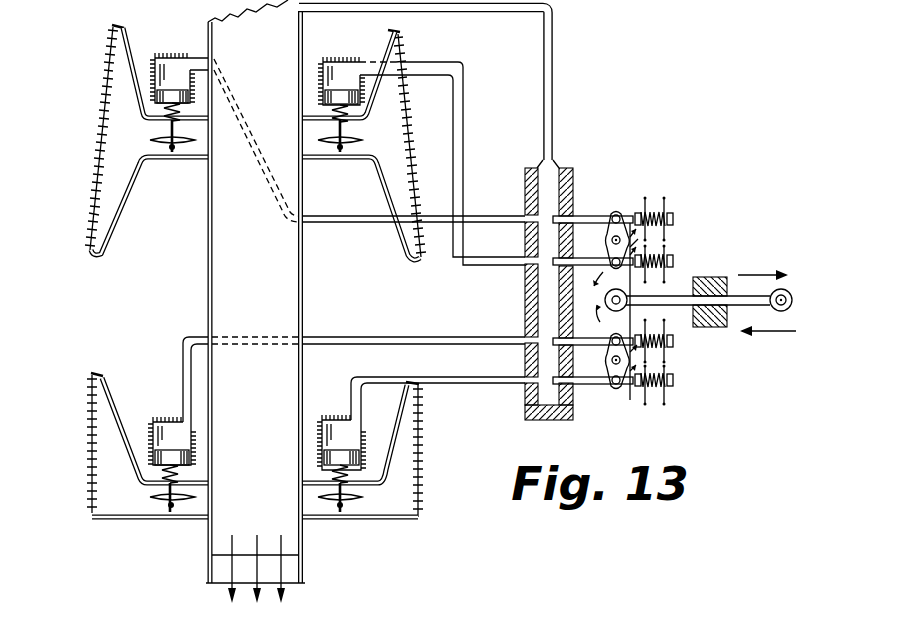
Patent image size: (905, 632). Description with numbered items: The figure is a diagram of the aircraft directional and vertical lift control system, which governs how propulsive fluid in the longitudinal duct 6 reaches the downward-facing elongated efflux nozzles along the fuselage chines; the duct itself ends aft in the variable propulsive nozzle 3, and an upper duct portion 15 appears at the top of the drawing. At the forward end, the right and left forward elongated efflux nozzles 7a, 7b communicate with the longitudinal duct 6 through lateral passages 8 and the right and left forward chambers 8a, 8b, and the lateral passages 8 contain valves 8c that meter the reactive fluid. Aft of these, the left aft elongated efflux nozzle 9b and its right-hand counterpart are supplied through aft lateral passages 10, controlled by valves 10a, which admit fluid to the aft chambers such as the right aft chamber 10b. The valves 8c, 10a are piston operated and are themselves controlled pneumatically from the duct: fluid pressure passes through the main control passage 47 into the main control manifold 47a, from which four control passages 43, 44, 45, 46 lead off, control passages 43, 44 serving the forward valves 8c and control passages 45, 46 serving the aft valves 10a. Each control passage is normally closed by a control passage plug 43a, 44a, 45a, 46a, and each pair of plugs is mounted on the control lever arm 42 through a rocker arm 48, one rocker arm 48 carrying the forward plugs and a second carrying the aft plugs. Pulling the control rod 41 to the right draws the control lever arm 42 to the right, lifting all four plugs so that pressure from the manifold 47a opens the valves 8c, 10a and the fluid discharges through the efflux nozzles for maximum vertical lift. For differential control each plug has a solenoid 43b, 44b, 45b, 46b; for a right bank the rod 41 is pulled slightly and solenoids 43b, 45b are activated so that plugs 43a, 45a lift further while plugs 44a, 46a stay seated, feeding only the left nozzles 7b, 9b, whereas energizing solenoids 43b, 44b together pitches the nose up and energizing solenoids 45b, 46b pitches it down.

The propulsive nozzle 3 is at (303, 583).
The longitudinal duct 6 is at (250, 274).
The right forward elongated efflux nozzle 7a is at (410, 156).
The left forward elongated efflux nozzle 7b is at (96, 126).
The forward lateral passage 8 is at (158, 157).
The right forward chamber 8a is at (370, 100).
The left forward chamber 8b is at (133, 72).
The forward lateral passage valve 8c is at (185, 152).
The left aft elongated efflux nozzle 9b is at (92, 478).
The aft lateral passage 10 is at (145, 513).
The aft lateral passage valve 10a is at (118, 430).
The right aft chamber 10b is at (397, 447).
The upper conduit section 15 is at (620, 4).
The control rod 41 is at (665, 296).
The control lever arm 42 is at (630, 242).
The control passage 43 is at (506, 215).
The control passage plug 43a is at (590, 216).
The solenoid 43b is at (660, 214).
The control passage 44 is at (500, 258).
The control passage plug 44a is at (601, 258).
The solenoid 44b is at (668, 256).
The control passage 45 is at (494, 337).
The control passage plug 45a is at (582, 346).
The solenoid 45b is at (668, 337).
The control passage 46 is at (488, 378).
The control passage plug 46a is at (588, 385).
The solenoid 46b is at (670, 393).
The main control passage 47 is at (553, 57).
The main control manifold 47a is at (558, 163).
The rocker arm 48 is at (620, 214).